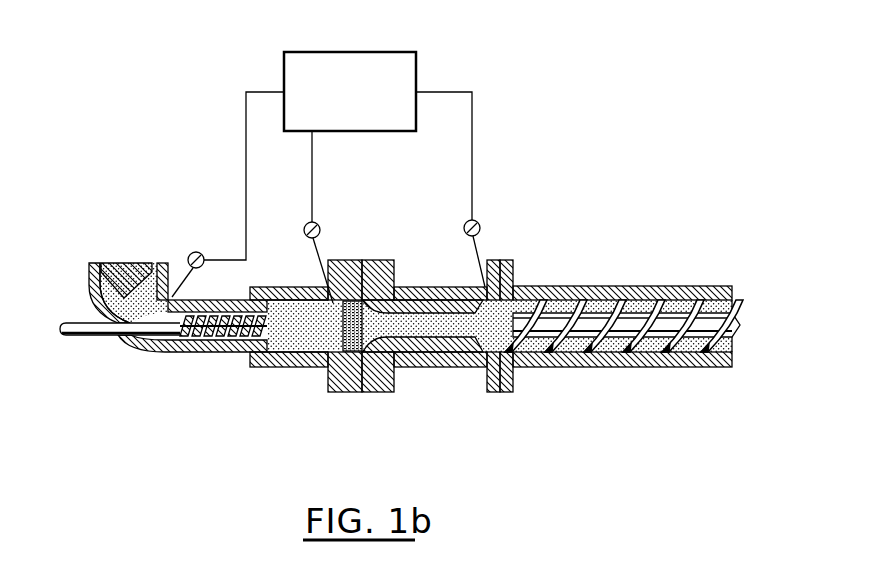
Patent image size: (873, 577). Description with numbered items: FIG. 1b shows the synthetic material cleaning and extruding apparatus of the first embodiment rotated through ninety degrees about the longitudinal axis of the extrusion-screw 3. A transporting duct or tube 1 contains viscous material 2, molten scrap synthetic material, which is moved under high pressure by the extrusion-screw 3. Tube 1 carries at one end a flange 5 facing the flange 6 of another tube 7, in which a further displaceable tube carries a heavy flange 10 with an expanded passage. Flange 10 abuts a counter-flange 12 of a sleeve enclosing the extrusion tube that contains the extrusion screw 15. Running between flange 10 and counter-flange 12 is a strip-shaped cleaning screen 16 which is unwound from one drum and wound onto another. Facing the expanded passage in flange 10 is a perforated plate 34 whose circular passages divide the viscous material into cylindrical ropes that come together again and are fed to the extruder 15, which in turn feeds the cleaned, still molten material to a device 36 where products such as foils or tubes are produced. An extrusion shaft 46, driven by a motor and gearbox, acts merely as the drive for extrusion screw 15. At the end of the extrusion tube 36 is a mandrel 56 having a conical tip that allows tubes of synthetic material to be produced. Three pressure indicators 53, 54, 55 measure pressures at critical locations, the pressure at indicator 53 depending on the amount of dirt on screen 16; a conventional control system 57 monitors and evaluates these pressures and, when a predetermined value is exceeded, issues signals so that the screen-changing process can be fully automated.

The transporting duct or tube 1 is at (619, 286).
The viscous material 2 is at (567, 293).
The extrusion-screw 3 is at (614, 348).
The flange 5 is at (513, 268).
The flange 6 is at (496, 259).
The tube 7 is at (437, 287).
The heavy flange 10 is at (379, 259).
The counter-flange 12 is at (345, 258).
The extrusion screw 15 is at (222, 345).
The strip-shaped cleaning screen 16 is at (378, 352).
The perforated plate 34 is at (308, 363).
The device 36 is at (88, 270).
The extrusion shaft 46 is at (101, 337).
The pressure indicator 53 is at (464, 226).
The pressure indicator 54 is at (304, 232).
The pressure indicator 55 is at (196, 252).
The mandrel 56 is at (122, 262).
The control system 57 is at (389, 52).